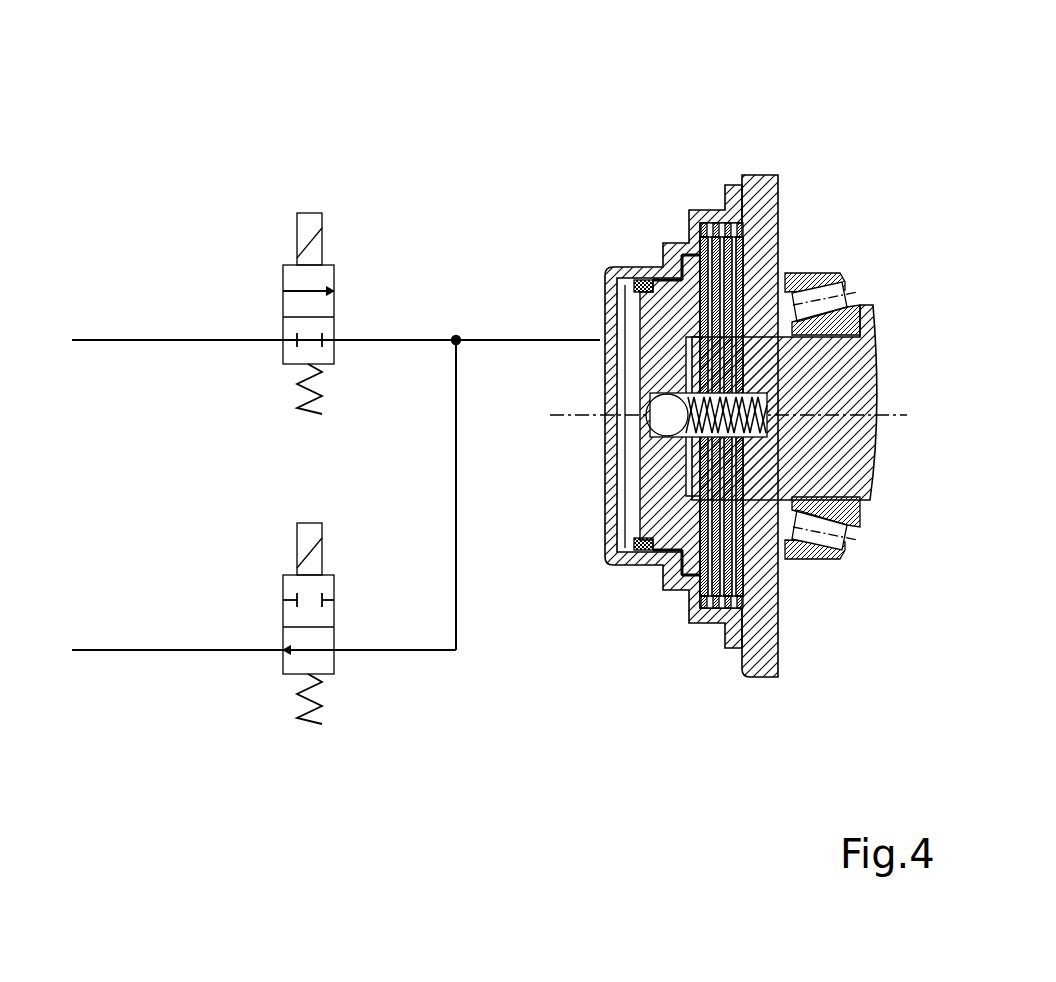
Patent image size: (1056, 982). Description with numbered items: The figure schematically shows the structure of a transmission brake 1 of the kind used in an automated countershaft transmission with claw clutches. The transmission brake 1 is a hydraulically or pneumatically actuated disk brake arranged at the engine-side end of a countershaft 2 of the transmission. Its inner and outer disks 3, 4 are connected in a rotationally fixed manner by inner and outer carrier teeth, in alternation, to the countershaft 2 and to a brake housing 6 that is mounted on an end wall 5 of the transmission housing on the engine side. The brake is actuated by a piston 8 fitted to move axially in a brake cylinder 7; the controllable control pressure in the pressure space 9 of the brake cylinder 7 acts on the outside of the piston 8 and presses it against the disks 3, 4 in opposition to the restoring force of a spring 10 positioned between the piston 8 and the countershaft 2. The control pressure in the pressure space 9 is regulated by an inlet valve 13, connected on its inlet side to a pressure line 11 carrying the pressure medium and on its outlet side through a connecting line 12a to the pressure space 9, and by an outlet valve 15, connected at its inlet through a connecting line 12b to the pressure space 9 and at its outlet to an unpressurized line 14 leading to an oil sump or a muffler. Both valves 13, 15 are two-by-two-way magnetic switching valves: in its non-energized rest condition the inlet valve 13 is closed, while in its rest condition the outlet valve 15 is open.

The transmission brake 1 is at (907, 230).
The countershaft 2 is at (815, 382).
The inner disks 3 is at (730, 627).
The outer disks 4 is at (720, 218).
The end wall 5 is at (757, 627).
The brake housing 6 is at (670, 243).
The brake cylinder 7 is at (643, 583).
The piston 8 is at (650, 345).
The pressure space 9 is at (600, 523).
The spring 10 is at (767, 423).
The pressure line 11 is at (157, 340).
The connecting line 12a is at (400, 340).
The connecting line 12b is at (398, 650).
The inlet valve 13 is at (287, 205).
The unpressurized line 14 is at (155, 650).
The outlet valve 15 is at (287, 700).